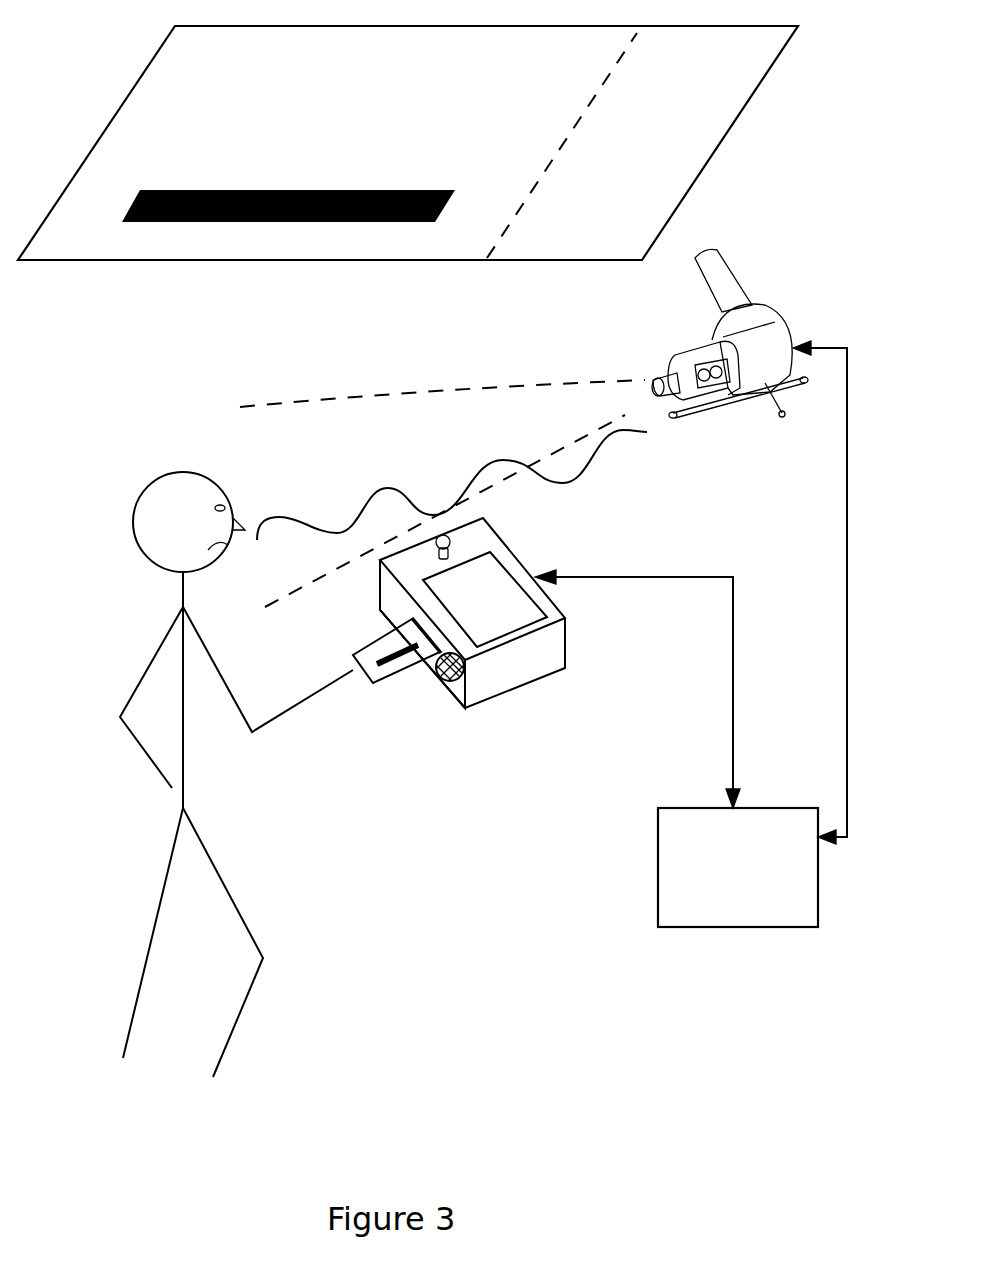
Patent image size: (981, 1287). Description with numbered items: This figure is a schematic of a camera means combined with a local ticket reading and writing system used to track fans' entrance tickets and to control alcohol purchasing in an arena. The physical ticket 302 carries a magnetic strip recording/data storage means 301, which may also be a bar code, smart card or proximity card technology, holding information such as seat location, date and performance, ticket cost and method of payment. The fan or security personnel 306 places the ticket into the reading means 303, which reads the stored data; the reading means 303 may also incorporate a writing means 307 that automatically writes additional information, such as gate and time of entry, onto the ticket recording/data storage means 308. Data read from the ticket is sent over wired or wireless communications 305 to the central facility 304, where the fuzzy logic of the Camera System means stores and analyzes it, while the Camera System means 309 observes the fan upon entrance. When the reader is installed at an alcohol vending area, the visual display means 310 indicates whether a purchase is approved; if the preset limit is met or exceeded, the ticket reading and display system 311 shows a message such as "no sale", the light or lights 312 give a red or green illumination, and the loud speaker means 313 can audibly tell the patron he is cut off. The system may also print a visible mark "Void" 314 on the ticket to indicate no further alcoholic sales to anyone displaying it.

The magnetic strip recording/data storage means 301 is at (337, 222).
The ticket 302 is at (162, 45).
The reading means 303 is at (522, 687).
The central facility 304 is at (658, 862).
The wired or wireless communications 305 is at (733, 647).
The fan or security personnel 306 is at (143, 552).
The writing means 307 is at (368, 590).
The ticket recording/data storage means 308 is at (397, 668).
The Camera System means 309 is at (693, 355).
The visual display means 310 is at (520, 633).
The ticket reading and display system 311 is at (503, 598).
The light or lights 312 is at (483, 518).
The loud speaker means 313 is at (440, 677).
The visible mark "Void" 314 is at (368, 635).